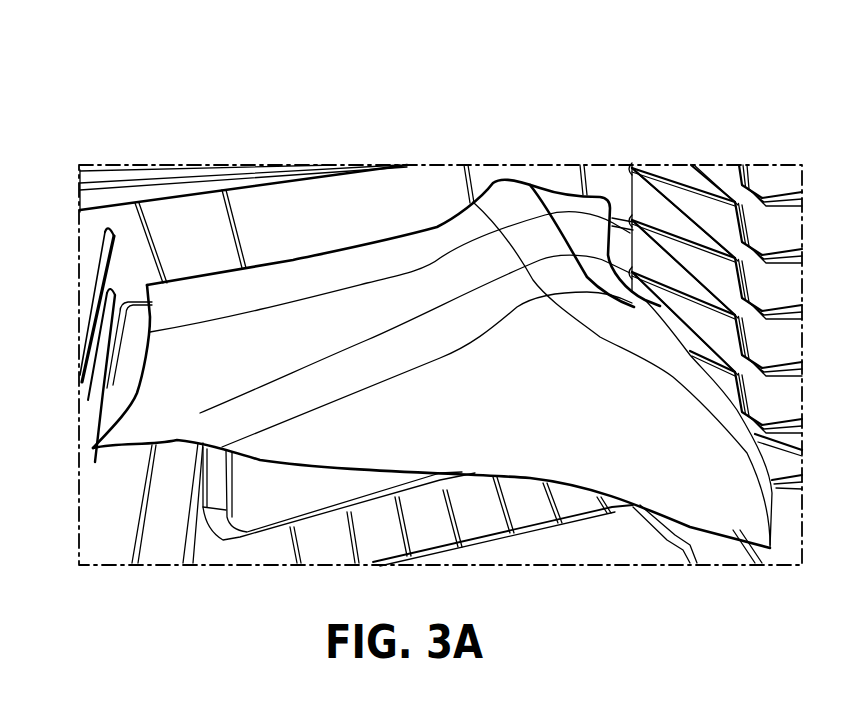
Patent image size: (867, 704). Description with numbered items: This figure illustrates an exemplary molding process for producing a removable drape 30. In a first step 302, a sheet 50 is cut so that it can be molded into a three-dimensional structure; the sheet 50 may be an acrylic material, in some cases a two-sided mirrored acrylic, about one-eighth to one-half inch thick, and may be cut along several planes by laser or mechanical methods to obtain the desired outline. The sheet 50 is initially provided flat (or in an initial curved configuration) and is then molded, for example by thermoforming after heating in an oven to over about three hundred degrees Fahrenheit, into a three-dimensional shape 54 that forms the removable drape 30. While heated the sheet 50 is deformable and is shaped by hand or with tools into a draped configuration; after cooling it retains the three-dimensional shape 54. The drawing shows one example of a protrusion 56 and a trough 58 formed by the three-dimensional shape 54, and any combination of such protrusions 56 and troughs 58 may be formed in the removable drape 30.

The removable drape 30 is at (78, 77).
The first step 302 is at (400, 60).
The sheet 50 is at (528, 297).
The three-dimensional shape 54 is at (285, 403).
The protrusion 56 is at (283, 313).
The trough 58 is at (373, 333).